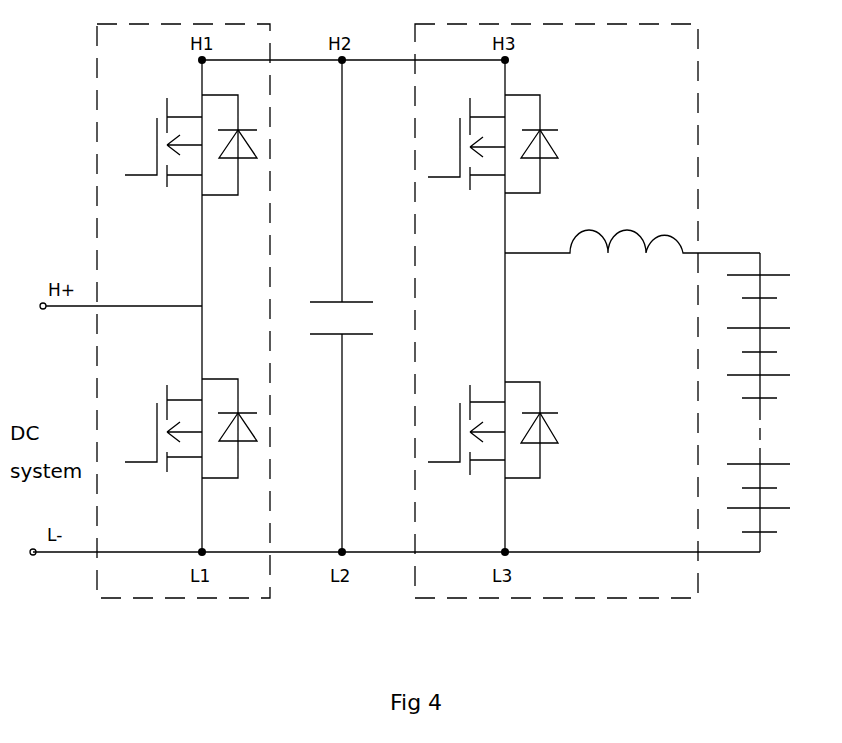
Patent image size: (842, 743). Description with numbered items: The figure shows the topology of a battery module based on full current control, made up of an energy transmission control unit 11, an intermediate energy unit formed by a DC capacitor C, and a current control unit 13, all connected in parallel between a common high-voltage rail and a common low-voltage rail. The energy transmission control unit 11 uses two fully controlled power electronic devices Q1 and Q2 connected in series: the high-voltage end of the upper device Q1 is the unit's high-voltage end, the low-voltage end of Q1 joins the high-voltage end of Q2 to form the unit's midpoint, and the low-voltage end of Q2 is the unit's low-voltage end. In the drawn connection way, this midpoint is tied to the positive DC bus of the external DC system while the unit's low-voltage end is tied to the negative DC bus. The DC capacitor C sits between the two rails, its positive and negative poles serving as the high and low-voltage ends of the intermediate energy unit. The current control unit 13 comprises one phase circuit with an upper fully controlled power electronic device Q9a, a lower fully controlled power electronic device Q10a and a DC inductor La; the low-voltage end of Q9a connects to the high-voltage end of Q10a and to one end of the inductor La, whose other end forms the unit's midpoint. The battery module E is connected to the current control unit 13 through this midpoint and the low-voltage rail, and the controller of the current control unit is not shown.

The energy transmission control unit 11 is at (172, 588).
The current control unit 13 is at (537, 585).
The fully controlled power electronic device Q1 is at (187, 145).
The fully controlled power electronic device Q2 is at (182, 428).
The upper fully controlled power electronic device Q9a is at (512, 144).
The lower fully controlled power electronic device Q10a is at (518, 430).
The DC capacitor C is at (352, 306).
The DC inductor La is at (632, 259).
The battery module E is at (768, 402).